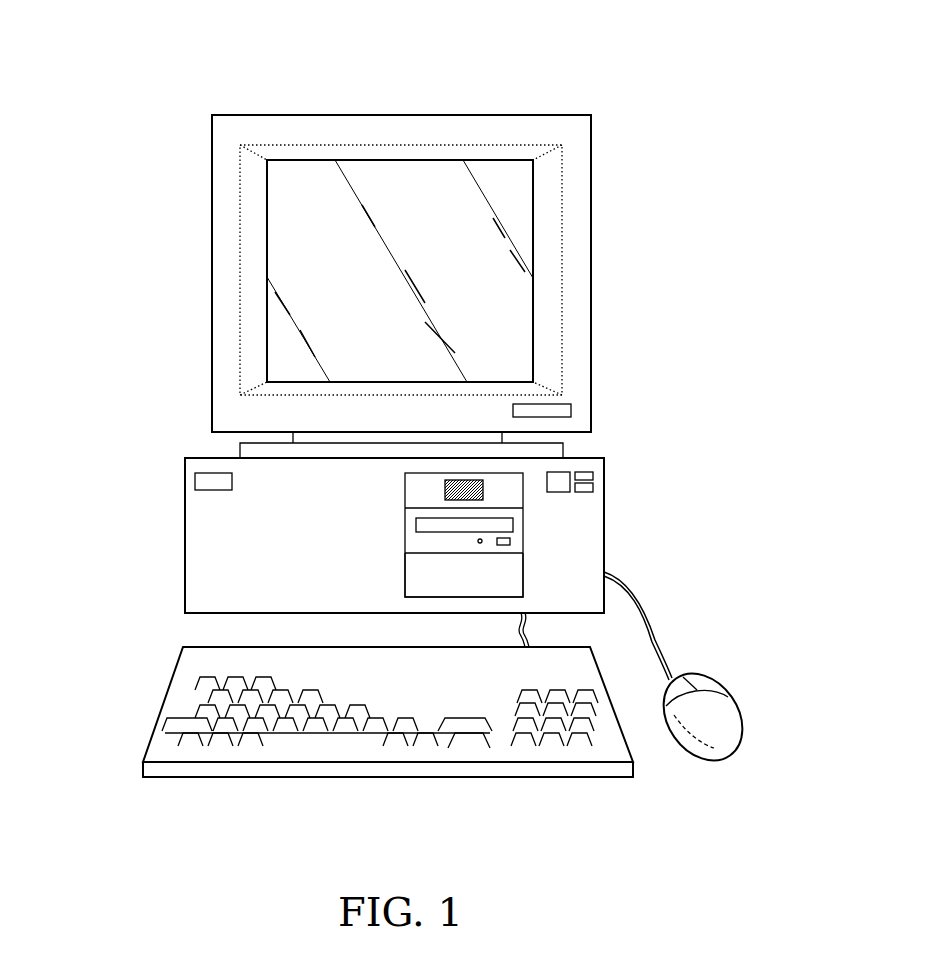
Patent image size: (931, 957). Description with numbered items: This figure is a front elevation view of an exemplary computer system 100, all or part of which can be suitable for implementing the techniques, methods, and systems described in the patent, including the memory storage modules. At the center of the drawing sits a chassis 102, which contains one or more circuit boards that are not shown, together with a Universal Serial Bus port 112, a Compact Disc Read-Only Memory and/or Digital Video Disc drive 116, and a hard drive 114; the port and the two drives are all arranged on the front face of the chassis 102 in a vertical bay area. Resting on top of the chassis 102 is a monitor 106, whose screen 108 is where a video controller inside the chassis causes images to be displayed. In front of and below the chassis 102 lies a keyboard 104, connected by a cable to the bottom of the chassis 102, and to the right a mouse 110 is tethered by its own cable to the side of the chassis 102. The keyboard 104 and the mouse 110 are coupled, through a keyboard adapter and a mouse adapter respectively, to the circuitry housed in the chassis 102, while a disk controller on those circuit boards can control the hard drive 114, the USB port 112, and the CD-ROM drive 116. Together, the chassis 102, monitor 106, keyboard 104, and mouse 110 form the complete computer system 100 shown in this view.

The computer system 100 is at (586, 87).
The chassis 102 is at (185, 538).
The keyboard 104 is at (160, 700).
The monitor 106 is at (287, 115).
The screen 108 is at (315, 277).
The mouse 110 is at (728, 697).
The Universal Serial Bus (USB) port 112 is at (482, 490).
The hard drive 114 is at (515, 573).
The Compact Disc Read-Only Memory (CD-ROM) and/or Digital Video Disc (DVD) drive 116 is at (523, 533).